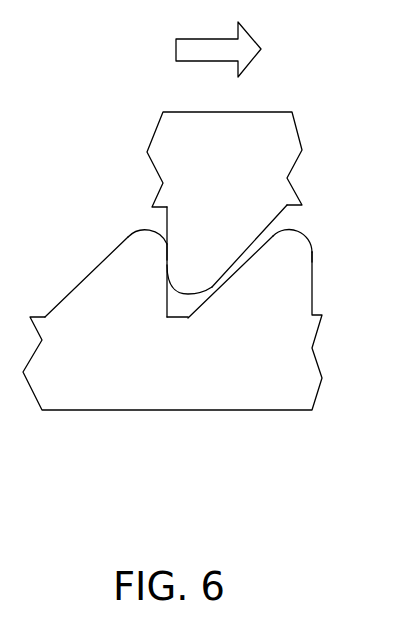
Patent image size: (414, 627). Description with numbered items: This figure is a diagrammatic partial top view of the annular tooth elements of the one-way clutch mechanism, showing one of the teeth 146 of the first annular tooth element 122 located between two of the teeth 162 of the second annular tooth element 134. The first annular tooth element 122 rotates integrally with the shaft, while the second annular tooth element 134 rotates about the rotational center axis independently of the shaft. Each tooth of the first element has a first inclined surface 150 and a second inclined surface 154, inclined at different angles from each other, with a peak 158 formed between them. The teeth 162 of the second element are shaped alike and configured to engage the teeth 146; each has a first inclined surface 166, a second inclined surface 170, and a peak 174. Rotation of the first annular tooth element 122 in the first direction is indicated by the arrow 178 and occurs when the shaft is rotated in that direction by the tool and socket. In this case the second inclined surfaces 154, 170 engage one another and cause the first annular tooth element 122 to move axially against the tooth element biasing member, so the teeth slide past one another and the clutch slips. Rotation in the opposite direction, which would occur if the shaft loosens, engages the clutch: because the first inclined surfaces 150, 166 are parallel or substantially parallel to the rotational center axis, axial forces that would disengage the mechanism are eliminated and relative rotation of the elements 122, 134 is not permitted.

The first annular tooth element 122 is at (184, 230).
The second annular tooth element 134 is at (196, 324).
The teeth 146 is at (196, 268).
The first inclined surface 150 is at (170, 229).
The second inclined surface 154 is at (258, 225).
The peak 158 is at (177, 300).
The teeth 162 is at (207, 279).
The first inclined surface 166 is at (164, 293).
The second inclined surface 170 is at (108, 257).
The peak 174 is at (142, 230).
The arrow 178 is at (193, 42).